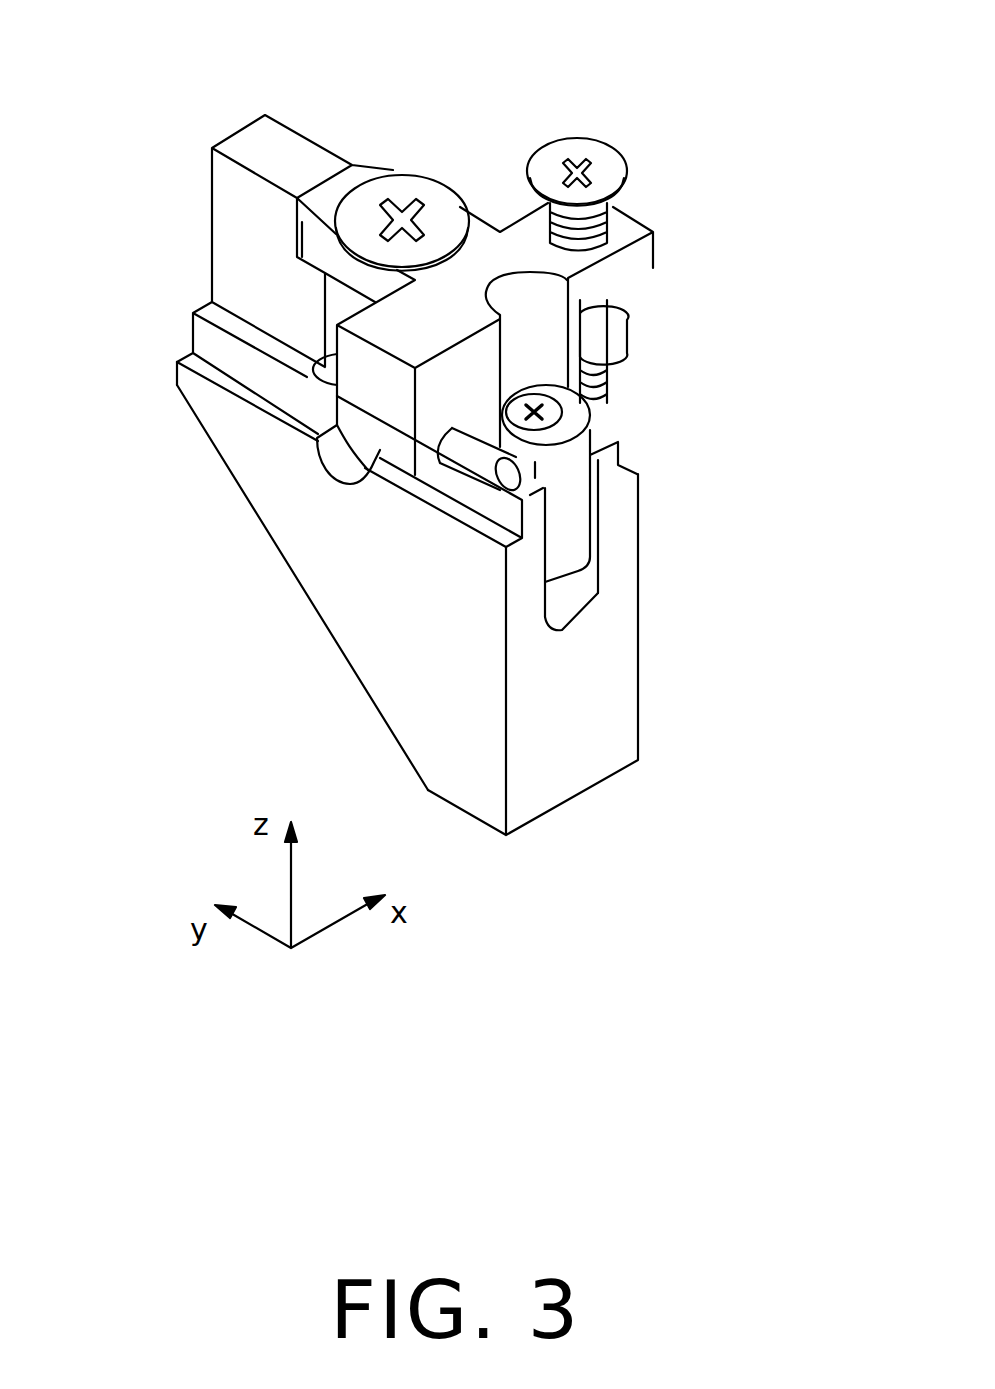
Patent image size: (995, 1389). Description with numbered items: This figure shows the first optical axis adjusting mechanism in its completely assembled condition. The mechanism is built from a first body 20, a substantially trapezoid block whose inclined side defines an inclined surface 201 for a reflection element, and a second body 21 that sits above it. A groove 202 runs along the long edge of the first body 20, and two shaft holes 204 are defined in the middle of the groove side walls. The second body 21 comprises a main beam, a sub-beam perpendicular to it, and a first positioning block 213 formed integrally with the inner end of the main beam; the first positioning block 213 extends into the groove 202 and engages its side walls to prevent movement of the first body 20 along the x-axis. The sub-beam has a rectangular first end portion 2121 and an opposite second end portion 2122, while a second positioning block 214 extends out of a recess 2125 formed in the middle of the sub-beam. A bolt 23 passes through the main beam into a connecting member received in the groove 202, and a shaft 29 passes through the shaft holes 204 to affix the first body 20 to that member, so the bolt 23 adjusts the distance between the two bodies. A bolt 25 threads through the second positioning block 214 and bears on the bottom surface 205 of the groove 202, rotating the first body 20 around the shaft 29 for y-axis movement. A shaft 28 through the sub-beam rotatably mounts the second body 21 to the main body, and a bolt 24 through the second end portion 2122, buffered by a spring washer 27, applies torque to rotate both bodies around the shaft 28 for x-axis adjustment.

The first body 20 is at (449, 568).
The inclined surface 201 is at (342, 655).
The groove 202 is at (585, 570).
The shaft holes 204 is at (338, 467).
The bottom surface 205 is at (560, 603).
The second body 21 is at (449, 259).
The first positioning block 213 is at (232, 224).
The first end portion 2121 is at (372, 387).
The second end portion 2122 is at (638, 257).
The recess 2125 is at (537, 313).
The second positioning block 214 is at (563, 487).
The bolt 23 is at (408, 188).
The bolt 24 is at (578, 152).
The bolt 25 is at (557, 410).
The spring washer 27 is at (613, 358).
The shaft 28 is at (322, 377).
The shaft 29 is at (357, 447).